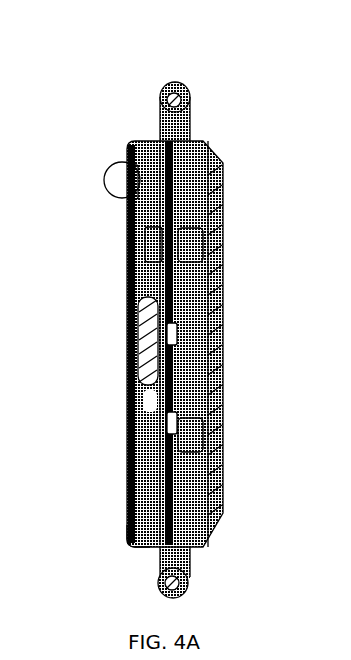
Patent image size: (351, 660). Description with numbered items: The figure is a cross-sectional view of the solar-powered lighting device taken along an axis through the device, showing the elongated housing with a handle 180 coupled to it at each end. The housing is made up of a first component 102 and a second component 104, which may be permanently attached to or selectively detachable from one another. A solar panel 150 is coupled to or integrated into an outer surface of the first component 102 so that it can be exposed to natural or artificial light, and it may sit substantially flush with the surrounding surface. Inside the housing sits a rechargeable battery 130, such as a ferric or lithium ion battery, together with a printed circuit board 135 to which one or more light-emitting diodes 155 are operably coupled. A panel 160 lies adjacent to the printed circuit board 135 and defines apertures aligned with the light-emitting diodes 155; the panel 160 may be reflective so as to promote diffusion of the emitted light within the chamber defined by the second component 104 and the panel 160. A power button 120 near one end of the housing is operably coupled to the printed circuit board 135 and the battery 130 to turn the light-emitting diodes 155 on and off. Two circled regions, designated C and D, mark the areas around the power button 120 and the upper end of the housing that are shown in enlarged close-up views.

The first component 102 is at (130, 519).
The second component 104 is at (218, 518).
The power button 120 is at (127, 183).
The rechargeable battery 130 is at (127, 352).
The printed circuit board 135 is at (145, 495).
The solar panel 150 is at (130, 436).
The light-emitting diode 155 is at (172, 335).
The panel 160 is at (172, 470).
The handle 180 is at (188, 588).
The area C is at (102, 168).
The area D is at (154, 126).